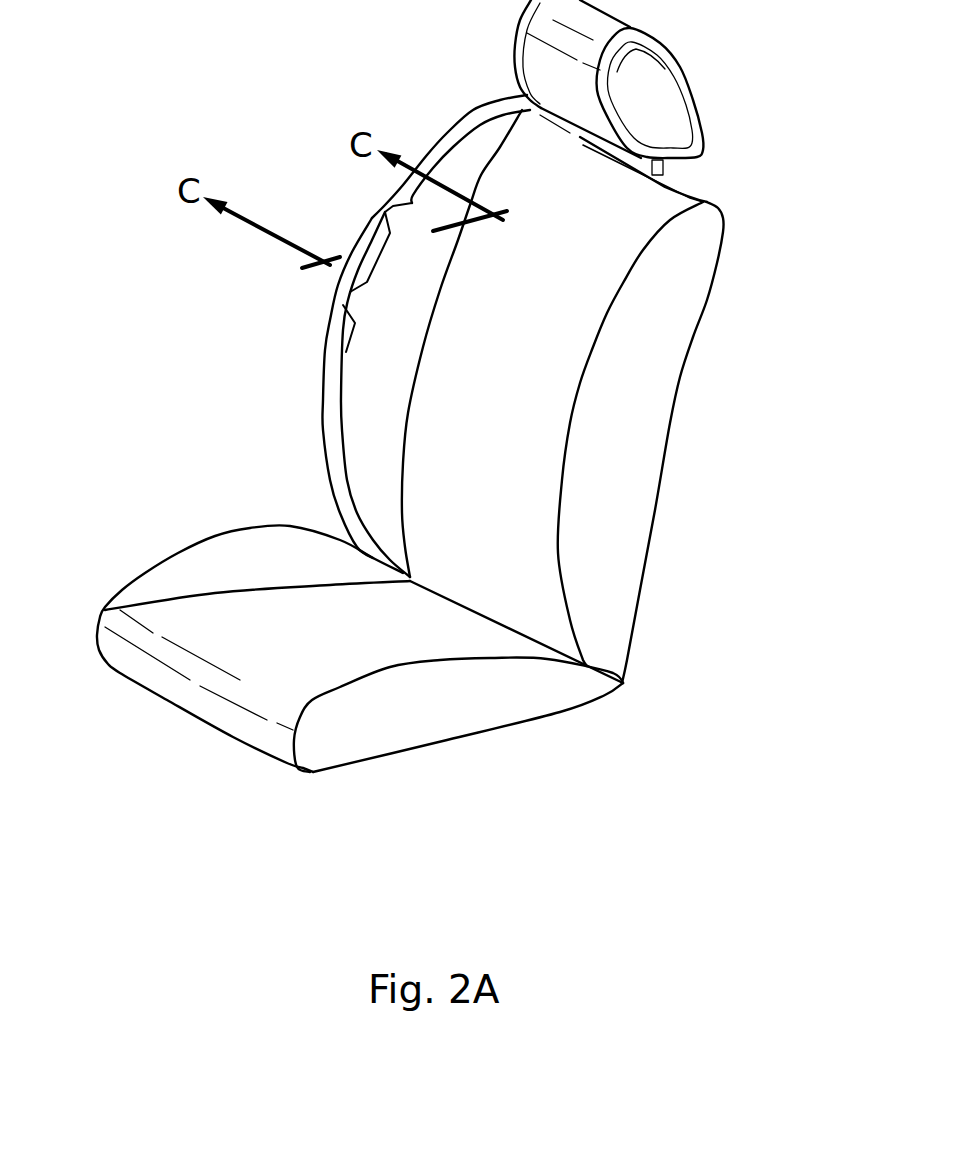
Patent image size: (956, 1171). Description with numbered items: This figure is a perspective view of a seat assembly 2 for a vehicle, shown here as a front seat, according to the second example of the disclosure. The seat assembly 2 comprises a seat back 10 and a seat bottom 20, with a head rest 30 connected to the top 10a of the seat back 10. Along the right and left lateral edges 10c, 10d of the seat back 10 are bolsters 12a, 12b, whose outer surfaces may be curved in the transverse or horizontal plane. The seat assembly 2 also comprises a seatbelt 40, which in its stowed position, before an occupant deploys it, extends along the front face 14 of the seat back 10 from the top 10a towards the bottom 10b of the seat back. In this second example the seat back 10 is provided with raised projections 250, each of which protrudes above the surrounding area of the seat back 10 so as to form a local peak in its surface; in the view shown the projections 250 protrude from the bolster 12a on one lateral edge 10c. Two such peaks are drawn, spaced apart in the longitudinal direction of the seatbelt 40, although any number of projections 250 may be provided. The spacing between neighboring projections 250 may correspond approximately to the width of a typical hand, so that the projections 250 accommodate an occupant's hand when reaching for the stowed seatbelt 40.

The seat assembly 2 is at (683, 543).
The seat back 10 is at (567, 317).
The top of the seat back 10a is at (700, 195).
The bottom of the seat back 10b is at (530, 645).
The right lateral edge of the seat back 10c is at (353, 407).
The left lateral edge of the seat back 10d is at (660, 390).
The bolster 12a is at (380, 483).
The bolster 12b is at (590, 485).
The front face of the seat back 14 is at (510, 165).
The seat bottom 20 is at (390, 720).
The head rest 30 is at (663, 93).
The seatbelt 40 is at (423, 162).
The raised projection 250 is at (388, 211).